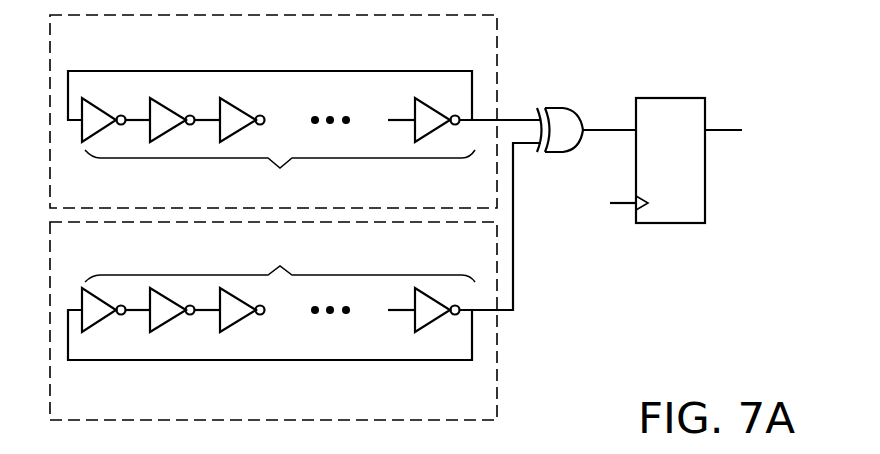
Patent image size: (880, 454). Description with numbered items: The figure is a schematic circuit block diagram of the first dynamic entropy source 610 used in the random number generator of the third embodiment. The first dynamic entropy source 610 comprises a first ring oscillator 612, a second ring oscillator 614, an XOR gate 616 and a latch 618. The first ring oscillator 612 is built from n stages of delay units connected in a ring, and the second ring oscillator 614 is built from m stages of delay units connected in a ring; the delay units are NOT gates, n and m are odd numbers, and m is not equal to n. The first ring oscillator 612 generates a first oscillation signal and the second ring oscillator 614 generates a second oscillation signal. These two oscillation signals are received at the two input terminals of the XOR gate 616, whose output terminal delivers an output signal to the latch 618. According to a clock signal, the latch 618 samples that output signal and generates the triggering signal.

The first dynamic entropy source 610 is at (588, 319).
The first ring oscillator 612 is at (108, 48).
The second ring oscillator 614 is at (108, 409).
The XOR gate 616 is at (563, 101).
The latch 618 is at (672, 96).